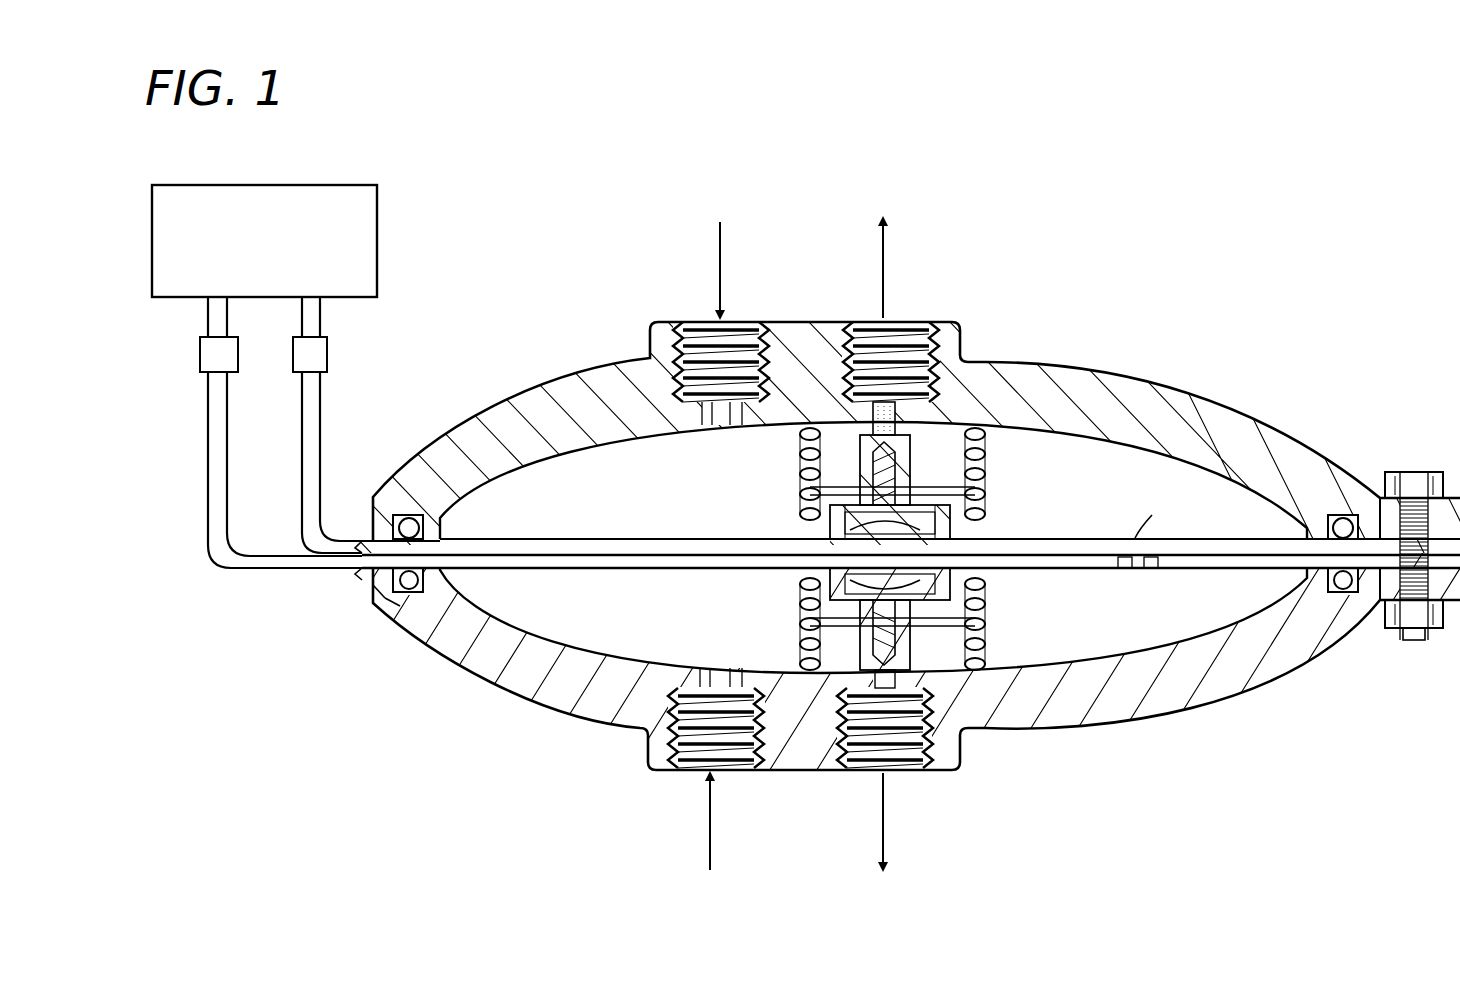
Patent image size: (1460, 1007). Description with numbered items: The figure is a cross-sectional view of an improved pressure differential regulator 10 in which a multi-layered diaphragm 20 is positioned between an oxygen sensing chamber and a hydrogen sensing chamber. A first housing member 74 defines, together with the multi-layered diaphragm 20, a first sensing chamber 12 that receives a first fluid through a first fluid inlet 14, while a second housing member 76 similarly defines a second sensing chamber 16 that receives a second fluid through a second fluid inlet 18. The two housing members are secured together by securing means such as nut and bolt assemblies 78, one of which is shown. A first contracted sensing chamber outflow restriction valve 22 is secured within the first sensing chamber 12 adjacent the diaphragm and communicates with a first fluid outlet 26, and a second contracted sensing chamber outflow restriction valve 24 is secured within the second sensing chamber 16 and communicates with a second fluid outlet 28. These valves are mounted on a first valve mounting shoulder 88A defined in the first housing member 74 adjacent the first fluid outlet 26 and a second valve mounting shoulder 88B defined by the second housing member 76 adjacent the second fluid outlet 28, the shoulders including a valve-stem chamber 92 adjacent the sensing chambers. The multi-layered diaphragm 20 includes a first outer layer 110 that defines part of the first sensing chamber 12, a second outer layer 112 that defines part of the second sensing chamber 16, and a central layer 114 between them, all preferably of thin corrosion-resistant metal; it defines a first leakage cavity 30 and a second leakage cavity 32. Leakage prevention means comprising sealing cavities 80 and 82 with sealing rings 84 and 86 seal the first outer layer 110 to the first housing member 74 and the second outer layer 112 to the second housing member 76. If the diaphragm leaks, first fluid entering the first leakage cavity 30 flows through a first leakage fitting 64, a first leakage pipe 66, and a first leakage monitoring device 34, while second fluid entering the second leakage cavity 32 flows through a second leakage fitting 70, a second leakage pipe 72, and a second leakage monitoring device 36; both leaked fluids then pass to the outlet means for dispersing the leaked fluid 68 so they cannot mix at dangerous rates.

The pressure differential regulator 10 is at (1243, 262).
The first sensing chamber 12 is at (1215, 497).
The first fluid inlet 14 is at (742, 316).
The second sensing chamber 16 is at (1155, 625).
The second fluid inlet 18 is at (738, 773).
The multi-layered diaphragm 20 is at (678, 540).
The first contracted sensing chamber outflow restriction valve 22 is at (918, 497).
The second contracted sensing chamber outflow restriction valve 24 is at (912, 615).
The first fluid outlet 26 is at (912, 316).
The second fluid outlet 28 is at (860, 775).
The first leakage cavity 30 is at (470, 540).
The second leakage cavity 32 is at (532, 568).
The first leakage monitoring device 34 is at (318, 358).
The second leakage monitoring device 36 is at (205, 358).
The first leakage fitting 64 is at (368, 541).
The first leakage pipe 66 is at (320, 441).
The outlet means for dispersing the leaked fluid 68 is at (264, 241).
The second leakage fitting 70 is at (365, 579).
The second leakage pipe 72 is at (222, 450).
The first housing member 74 is at (1190, 400).
The second housing member 76 is at (1232, 670).
The nut and bolt assembly 78 is at (1427, 476).
The sealing cavity 80 is at (408, 514).
The sealing cavity 82 is at (380, 593).
The sealing ring 84 is at (413, 521).
The sealing ring 86 is at (398, 602).
The first valve mounting shoulder 88A is at (805, 440).
The second valve mounting shoulder 88B is at (805, 634).
The valve-stem chamber 92 is at (860, 450).
The first outer layer 110 is at (1152, 515).
The second outer layer 112 is at (1125, 569).
The central layer 114 is at (1152, 569).